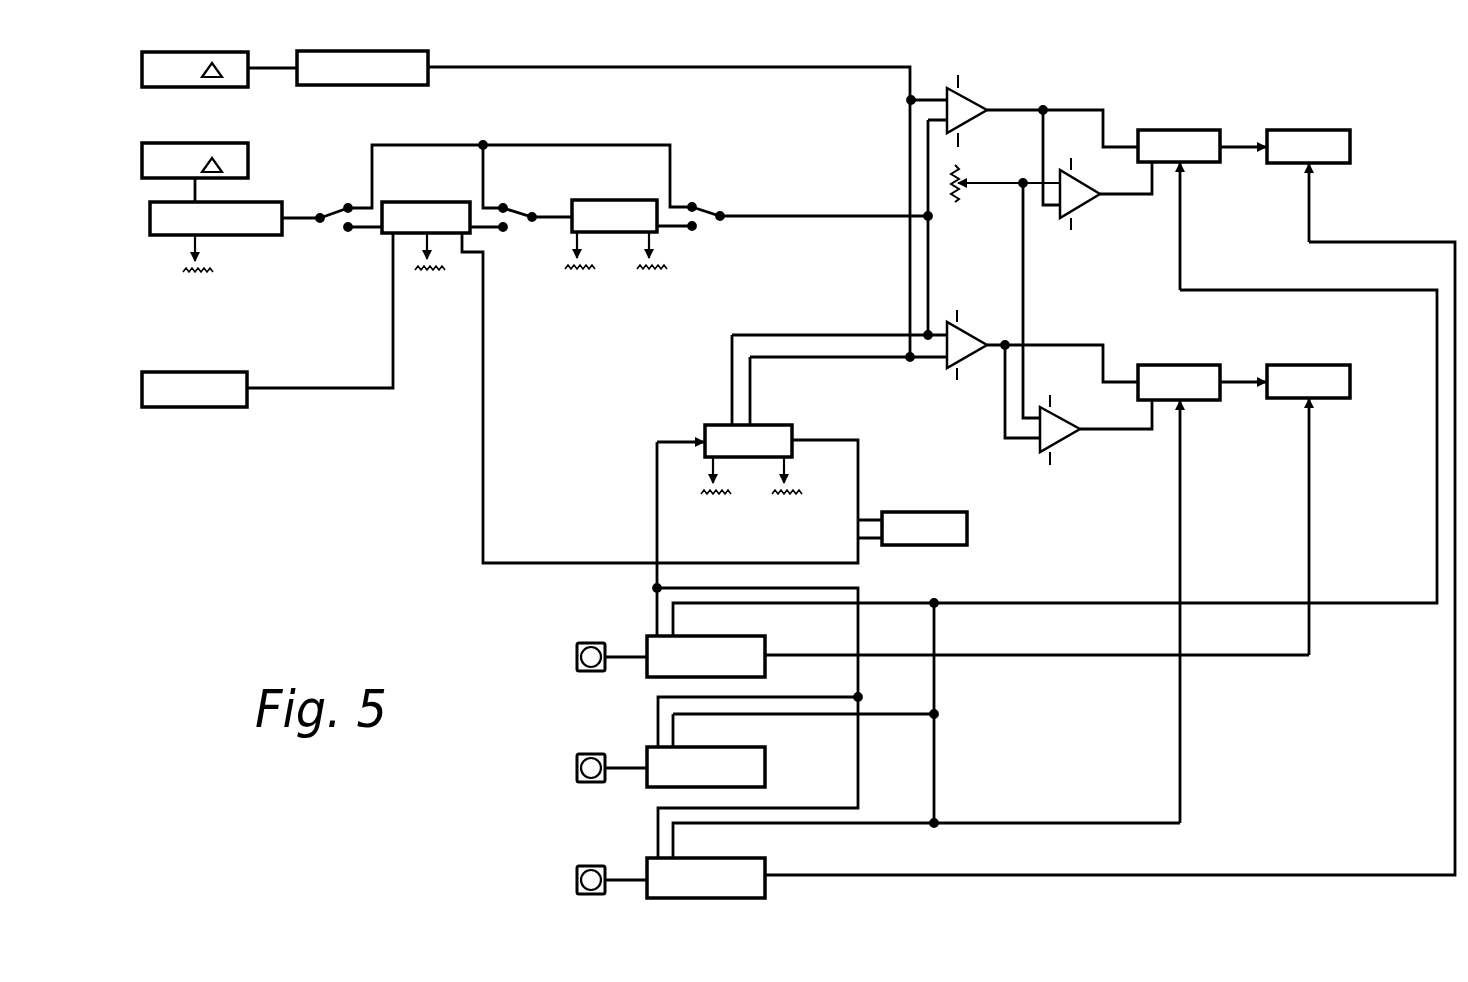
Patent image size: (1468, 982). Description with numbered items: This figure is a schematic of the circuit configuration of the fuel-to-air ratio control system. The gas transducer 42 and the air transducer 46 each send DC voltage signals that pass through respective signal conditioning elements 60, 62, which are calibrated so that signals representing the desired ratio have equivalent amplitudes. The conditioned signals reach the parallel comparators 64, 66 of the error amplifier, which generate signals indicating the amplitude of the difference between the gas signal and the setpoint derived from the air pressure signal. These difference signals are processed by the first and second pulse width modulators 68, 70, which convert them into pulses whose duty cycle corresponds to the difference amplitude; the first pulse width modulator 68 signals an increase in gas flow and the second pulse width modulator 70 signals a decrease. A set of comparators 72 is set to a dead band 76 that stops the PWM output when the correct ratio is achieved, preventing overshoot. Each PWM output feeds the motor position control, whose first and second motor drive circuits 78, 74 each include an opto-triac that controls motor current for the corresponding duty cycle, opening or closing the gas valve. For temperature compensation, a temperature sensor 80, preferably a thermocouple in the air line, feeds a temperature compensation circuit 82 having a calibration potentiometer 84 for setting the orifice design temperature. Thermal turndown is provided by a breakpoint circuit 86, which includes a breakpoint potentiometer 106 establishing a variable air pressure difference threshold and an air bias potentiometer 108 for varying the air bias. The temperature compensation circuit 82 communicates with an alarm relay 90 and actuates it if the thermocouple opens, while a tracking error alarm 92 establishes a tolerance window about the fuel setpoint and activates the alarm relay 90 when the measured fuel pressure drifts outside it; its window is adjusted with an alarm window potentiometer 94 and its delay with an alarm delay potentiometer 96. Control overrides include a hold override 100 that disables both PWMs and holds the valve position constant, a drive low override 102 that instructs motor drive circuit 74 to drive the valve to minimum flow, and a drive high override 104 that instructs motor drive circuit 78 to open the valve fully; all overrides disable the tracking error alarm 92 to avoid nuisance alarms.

The gas transducer 42 is at (190, 143).
The air transducer 46 is at (210, 88).
The signal conditioning element 60 is at (245, 237).
The signal conditioning element 62 is at (393, 86).
The comparator 64 is at (972, 322).
The comparator 66 is at (970, 92).
The first pulse width modulator 68 is at (1188, 365).
The second pulse width modulator 70 is at (1188, 127).
The comparator 72 is at (1080, 207).
The second motor drive circuit 74 is at (1353, 148).
The dead band 76 is at (965, 205).
The first motor drive circuit 78 is at (1353, 383).
The temperature sensor 80 is at (185, 372).
The temperature compensation circuit 82 is at (412, 202).
The calibration potentiometer 84 is at (435, 285).
The breakpoint circuit 86 is at (600, 200).
The alarm relay 90 is at (920, 512).
The tracking error alarm 92 is at (780, 425).
The alarm window potentiometer 94 is at (717, 507).
The alarm delay potentiometer 96 is at (788, 507).
The hold override 100 is at (767, 768).
The drive low override 102 is at (767, 867).
The drive high override 104 is at (765, 645).
The breakpoint potentiometer 106 is at (587, 283).
The air bias potentiometer 108 is at (659, 283).